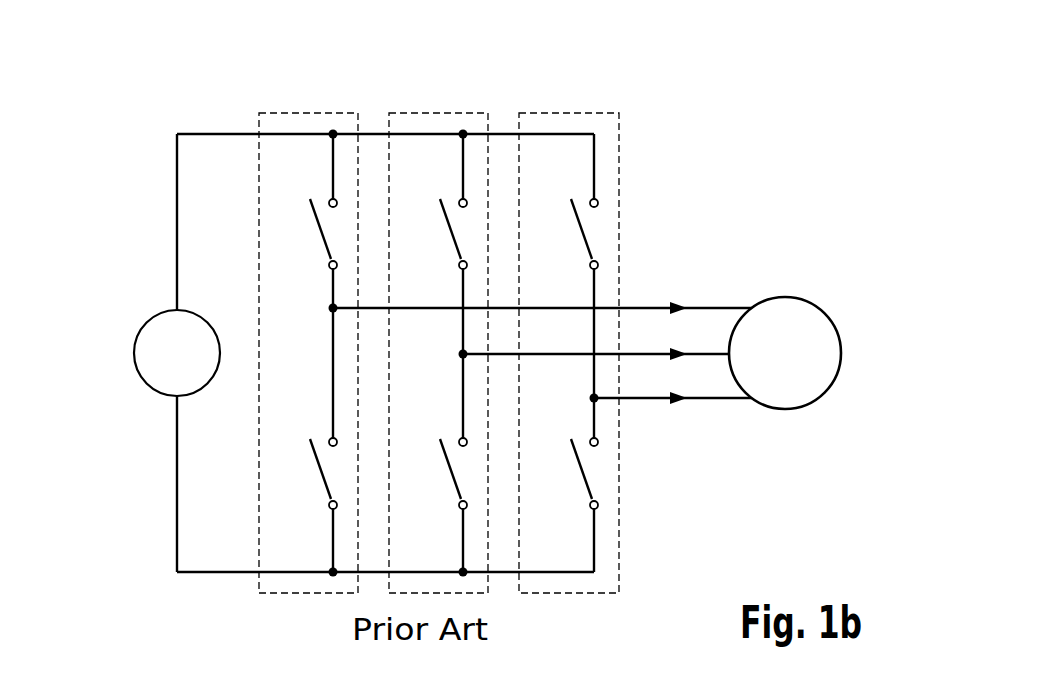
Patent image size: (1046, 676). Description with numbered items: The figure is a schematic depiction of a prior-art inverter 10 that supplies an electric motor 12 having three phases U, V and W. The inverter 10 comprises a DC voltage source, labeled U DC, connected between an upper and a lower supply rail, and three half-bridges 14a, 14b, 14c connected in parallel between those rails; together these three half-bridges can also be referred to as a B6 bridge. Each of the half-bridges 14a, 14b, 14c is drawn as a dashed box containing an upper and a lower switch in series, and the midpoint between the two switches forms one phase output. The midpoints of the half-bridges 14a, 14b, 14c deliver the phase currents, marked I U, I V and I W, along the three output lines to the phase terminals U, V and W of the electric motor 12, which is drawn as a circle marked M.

The inverter 10 is at (138, 526).
The electric motor 12 is at (786, 297).
The half-bridge 14a is at (305, 113).
The half-bridge 14b is at (435, 113).
The half-bridge 14c is at (566, 113).